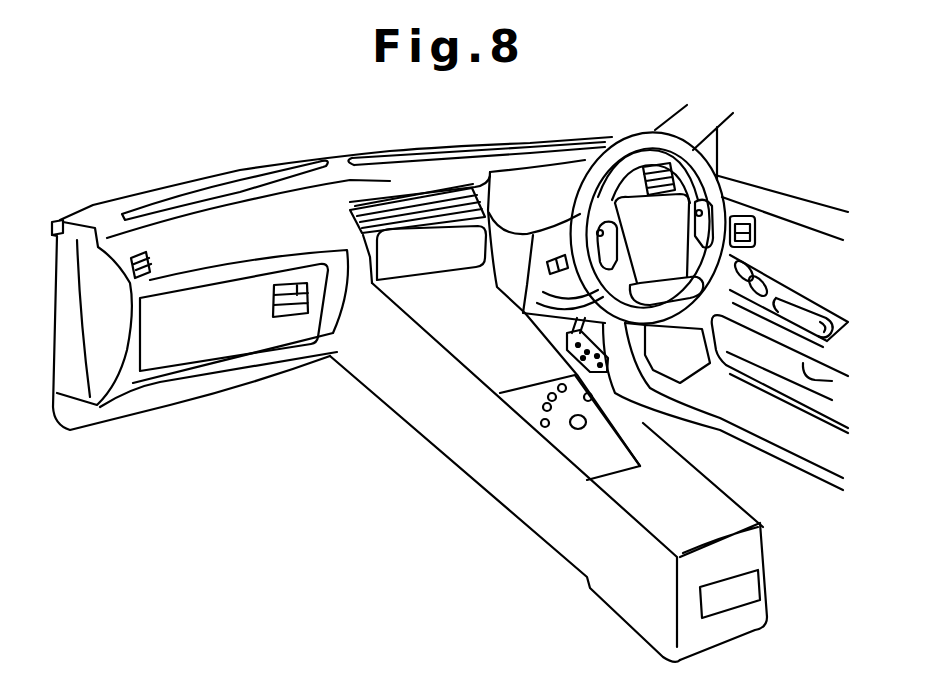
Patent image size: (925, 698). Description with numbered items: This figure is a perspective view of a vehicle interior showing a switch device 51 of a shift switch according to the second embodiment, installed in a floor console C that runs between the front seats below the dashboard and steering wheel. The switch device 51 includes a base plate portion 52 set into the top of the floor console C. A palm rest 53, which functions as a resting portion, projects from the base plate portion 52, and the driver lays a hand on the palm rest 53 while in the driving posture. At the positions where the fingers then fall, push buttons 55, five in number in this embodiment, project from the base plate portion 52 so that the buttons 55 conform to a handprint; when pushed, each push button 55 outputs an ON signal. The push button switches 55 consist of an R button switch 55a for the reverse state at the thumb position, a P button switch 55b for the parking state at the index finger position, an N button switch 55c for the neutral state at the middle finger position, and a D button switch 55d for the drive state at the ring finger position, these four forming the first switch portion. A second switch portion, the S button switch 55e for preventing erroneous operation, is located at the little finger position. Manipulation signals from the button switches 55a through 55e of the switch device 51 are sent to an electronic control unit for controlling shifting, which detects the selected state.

The push buttons 55 is at (514, 385).
The R button switch 55a is at (643, 422).
The P button switch 55b is at (558, 385).
The N button switch 55c is at (548, 393).
The D button switch 55d is at (540, 420).
The S button switch 55e is at (545, 430).
The palm rest 53 is at (586, 426).
The base plate portion 52 is at (640, 455).
The switch device 51 is at (612, 470).
The floor console C is at (472, 452).